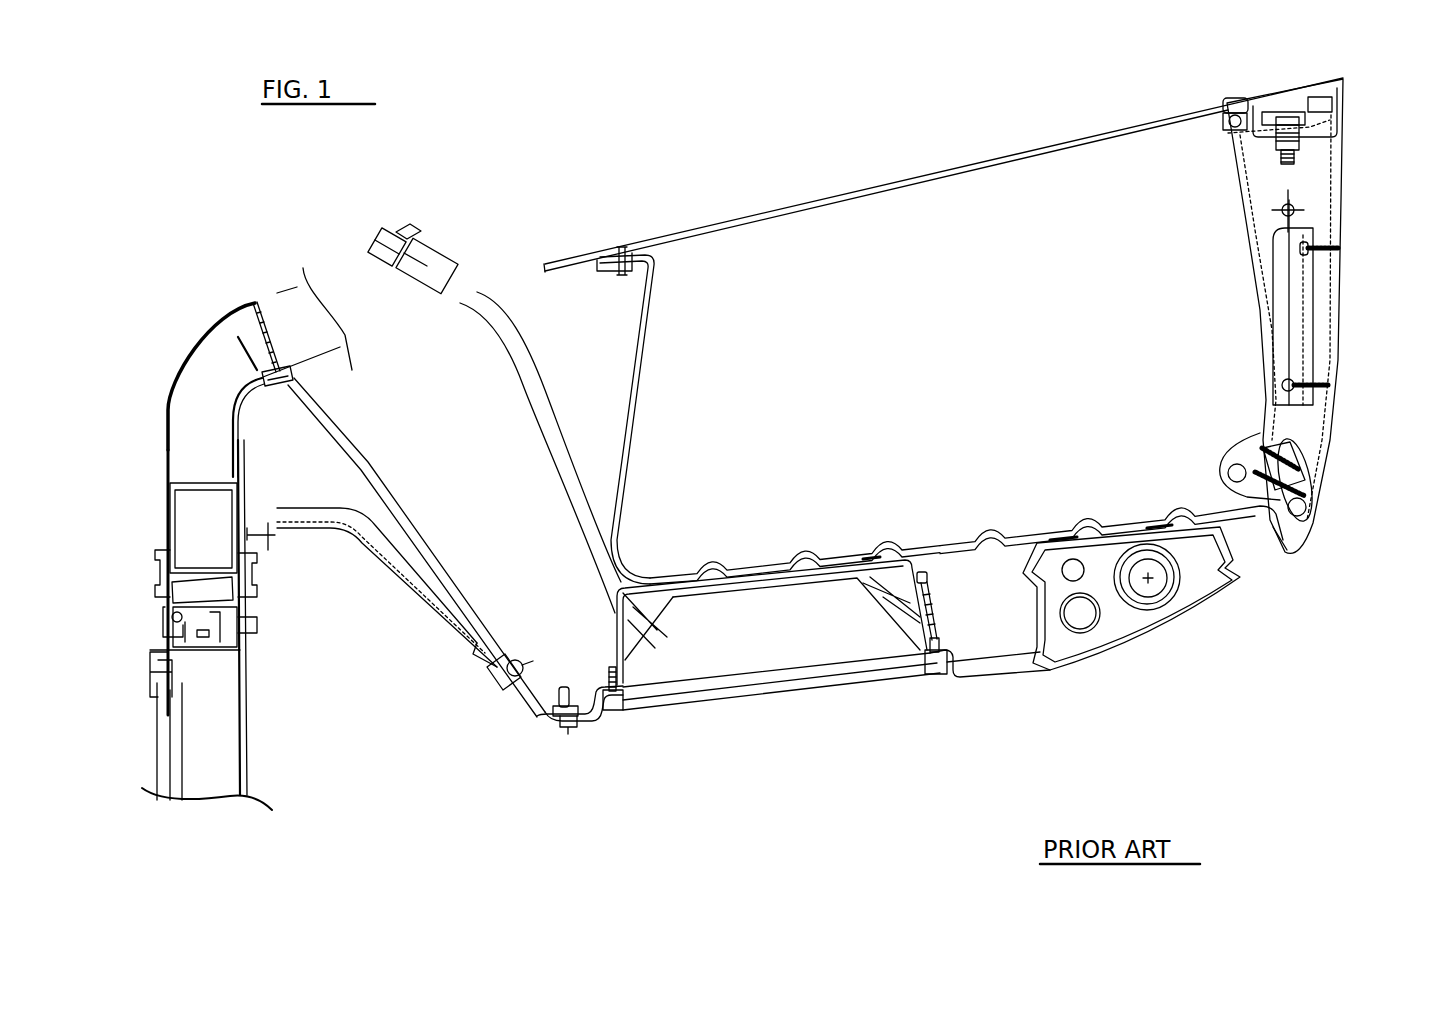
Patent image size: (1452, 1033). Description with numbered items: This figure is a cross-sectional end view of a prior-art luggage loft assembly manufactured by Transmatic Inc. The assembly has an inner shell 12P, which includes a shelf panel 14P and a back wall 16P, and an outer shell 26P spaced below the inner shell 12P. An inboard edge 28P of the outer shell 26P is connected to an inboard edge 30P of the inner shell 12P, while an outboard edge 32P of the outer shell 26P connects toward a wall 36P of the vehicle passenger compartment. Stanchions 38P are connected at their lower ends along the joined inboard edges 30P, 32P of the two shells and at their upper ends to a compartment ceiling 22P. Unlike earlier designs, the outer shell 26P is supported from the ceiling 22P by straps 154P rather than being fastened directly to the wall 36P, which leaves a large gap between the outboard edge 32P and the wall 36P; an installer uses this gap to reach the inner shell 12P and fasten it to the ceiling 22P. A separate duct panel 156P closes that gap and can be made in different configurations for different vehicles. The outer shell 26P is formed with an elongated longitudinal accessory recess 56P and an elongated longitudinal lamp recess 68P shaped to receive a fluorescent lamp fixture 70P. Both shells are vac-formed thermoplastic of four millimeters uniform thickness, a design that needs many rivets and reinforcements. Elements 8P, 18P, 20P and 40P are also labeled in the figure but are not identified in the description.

The air intake tube elbow 8P is at (273, 307).
The compartment ceiling 22P is at (325, 360).
The straps 154P is at (377, 455).
The duct panel 156P is at (408, 593).
The wall of vehicle passenger compartment 36P is at (244, 680).
The outboard edge of outer shell 32P is at (490, 663).
The accessory recess 56P is at (623, 640).
The upper bar 20P is at (545, 268).
The back wall 16P is at (637, 407).
The wavy rail 18P is at (670, 577).
The inner shell 12P is at (745, 560).
The shelf panel 14P is at (953, 543).
The outer shell 26P is at (988, 685).
The lamp recess 68P is at (1037, 603).
The fluorescent lamp fixture 70P is at (1180, 603).
The top bracket 40P is at (1340, 92).
The stanchions 38P is at (1310, 190).
The inboard edge of inner shell 30P is at (1313, 453).
The inboard edge of outer shell 28P is at (1312, 480).